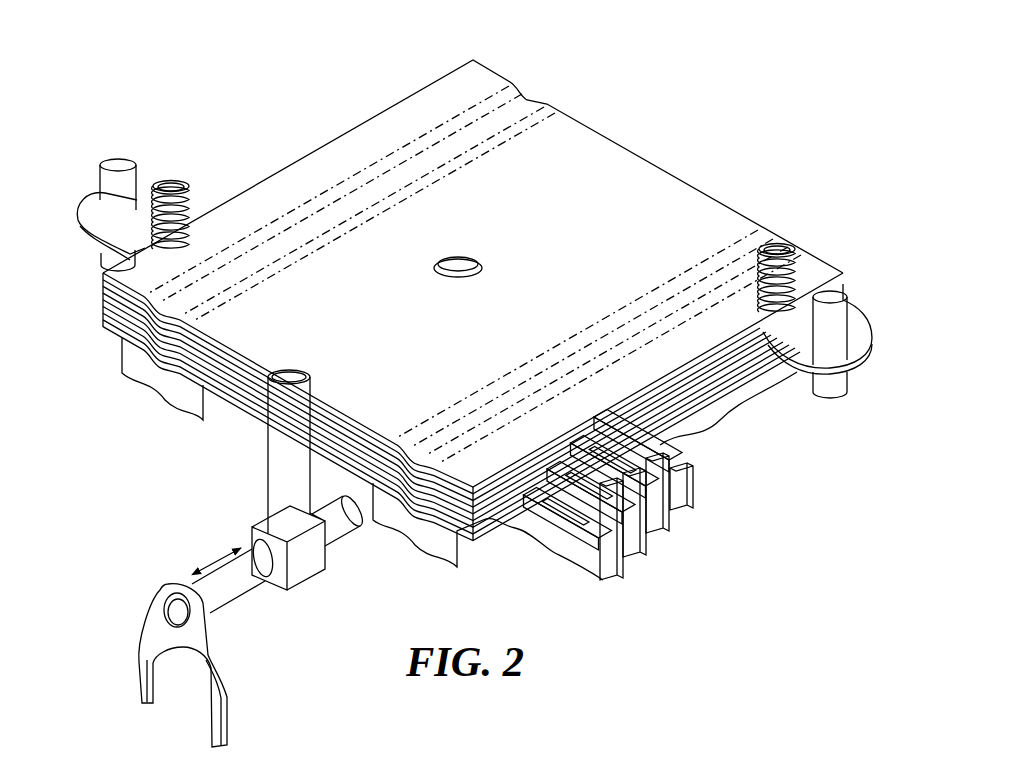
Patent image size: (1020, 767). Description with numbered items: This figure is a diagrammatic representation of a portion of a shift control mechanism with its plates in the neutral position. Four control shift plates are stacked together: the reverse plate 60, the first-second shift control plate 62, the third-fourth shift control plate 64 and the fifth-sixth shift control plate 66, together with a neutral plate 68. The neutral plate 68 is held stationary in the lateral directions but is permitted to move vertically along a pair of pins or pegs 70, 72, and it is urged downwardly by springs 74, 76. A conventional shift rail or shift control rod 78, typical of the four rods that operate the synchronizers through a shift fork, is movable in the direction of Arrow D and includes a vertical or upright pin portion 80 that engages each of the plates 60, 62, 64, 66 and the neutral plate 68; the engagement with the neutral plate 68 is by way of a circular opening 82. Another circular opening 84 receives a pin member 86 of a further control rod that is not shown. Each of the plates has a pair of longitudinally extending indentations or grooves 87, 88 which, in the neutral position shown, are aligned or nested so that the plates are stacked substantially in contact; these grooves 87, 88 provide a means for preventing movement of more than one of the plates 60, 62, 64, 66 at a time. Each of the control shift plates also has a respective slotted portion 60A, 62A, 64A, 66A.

The reverse plate 60 is at (105, 283).
The 1-2 shift control plate 62 is at (103, 300).
The 3-4 shift control plate 64 is at (104, 316).
The 5-6 shift control plate 66 is at (113, 333).
The slotted portion 60A is at (683, 490).
The slotted portion 62A is at (660, 513).
The slotted portion 64A is at (638, 545).
The slotted portion 66A is at (614, 570).
The neutral plate 68 is at (144, 197).
The pin 70 is at (96, 185).
The pin 72 is at (851, 305).
The spring 74 is at (196, 201).
The spring 76 is at (803, 259).
The shift control rod 78 is at (258, 596).
The upright pin portion 80 is at (270, 474).
The circular opening 82 is at (291, 371).
The circular opening 84 is at (450, 258).
The pin member 86 is at (462, 258).
The longitudinal indentation 87 is at (537, 99).
The longitudinal indentation 88 is at (781, 245).